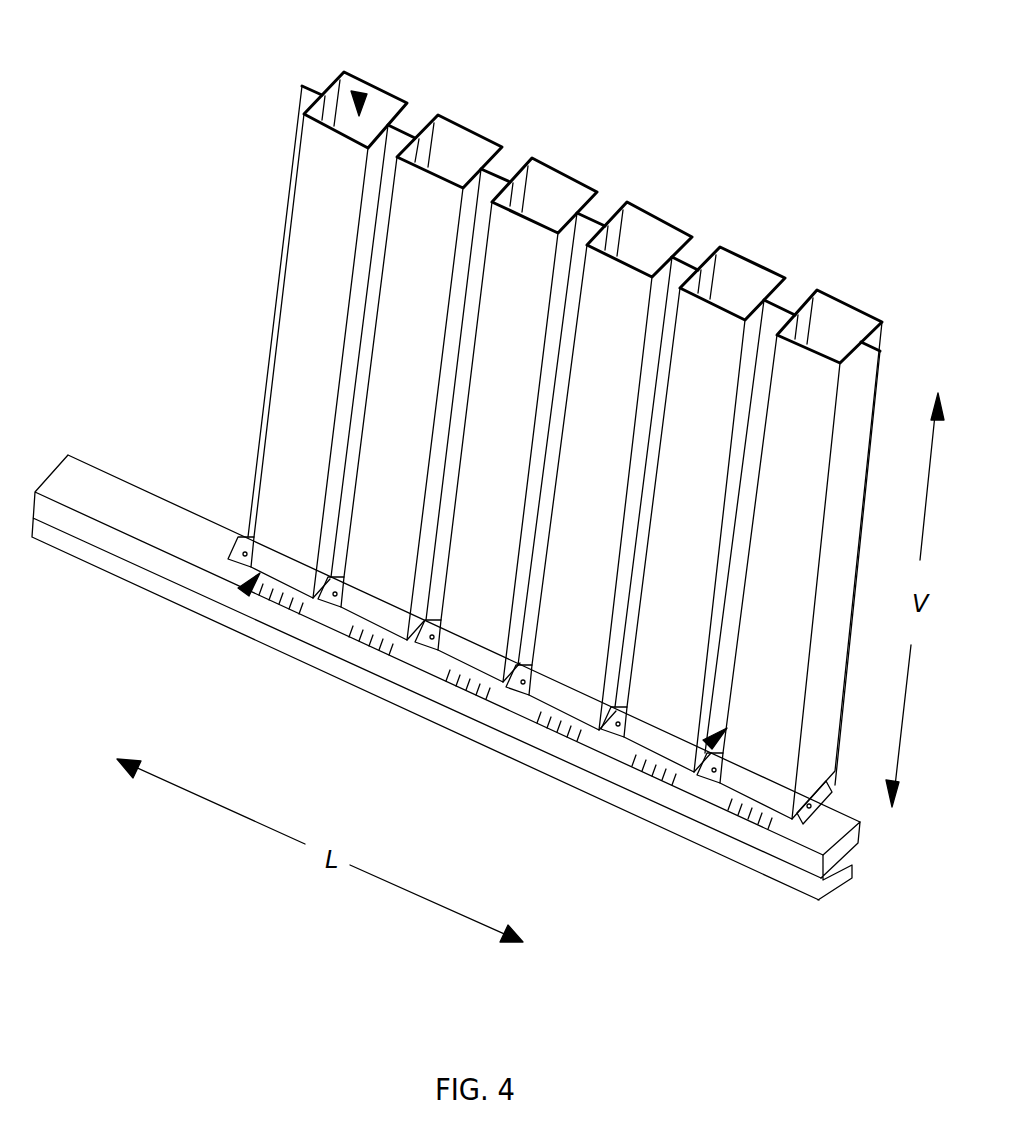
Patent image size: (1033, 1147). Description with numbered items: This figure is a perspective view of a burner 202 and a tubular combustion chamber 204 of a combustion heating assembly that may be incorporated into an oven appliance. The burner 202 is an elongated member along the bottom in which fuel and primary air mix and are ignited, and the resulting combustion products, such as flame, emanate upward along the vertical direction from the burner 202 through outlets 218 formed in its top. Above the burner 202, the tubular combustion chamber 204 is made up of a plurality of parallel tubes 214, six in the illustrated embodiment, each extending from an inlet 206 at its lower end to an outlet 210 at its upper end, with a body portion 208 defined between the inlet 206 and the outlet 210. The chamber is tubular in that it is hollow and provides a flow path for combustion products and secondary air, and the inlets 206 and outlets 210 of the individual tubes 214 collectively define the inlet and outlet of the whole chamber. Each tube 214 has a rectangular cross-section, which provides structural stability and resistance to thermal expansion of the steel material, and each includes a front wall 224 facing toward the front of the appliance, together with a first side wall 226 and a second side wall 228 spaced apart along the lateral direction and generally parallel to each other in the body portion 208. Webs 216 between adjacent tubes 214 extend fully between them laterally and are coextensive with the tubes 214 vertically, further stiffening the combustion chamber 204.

The burner 202 is at (92, 482).
The tubular combustion chamber 204 is at (192, 214).
The inlet 206 is at (245, 589).
The body portion 208 is at (290, 343).
The outlet 210 is at (356, 88).
The tubes 214 is at (389, 93).
The webs 216 is at (404, 128).
The outlets 218 is at (325, 580).
The front wall 224 is at (805, 557).
The first side wall 226 is at (708, 745).
The second side wall 228 is at (846, 826).